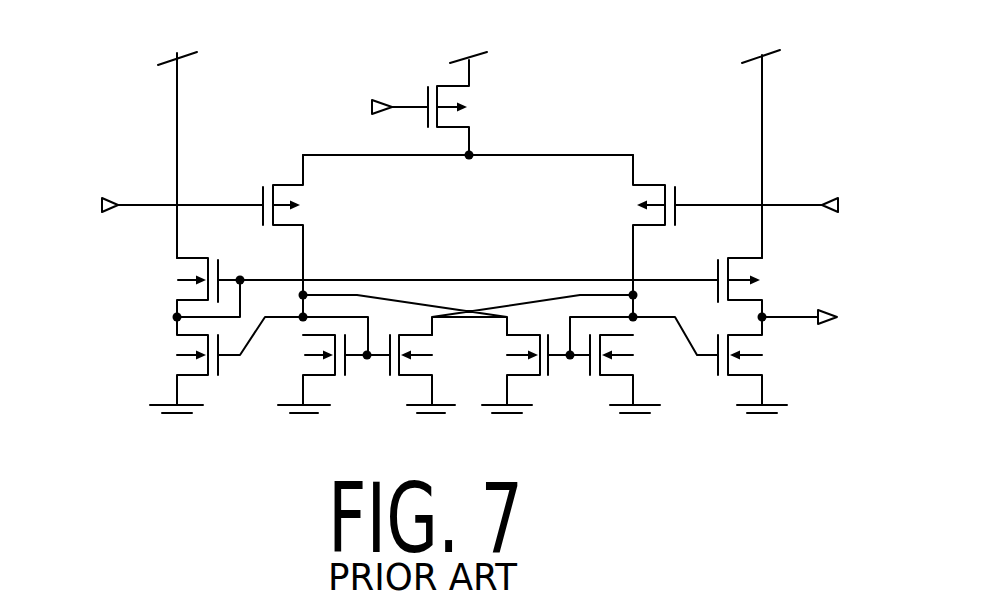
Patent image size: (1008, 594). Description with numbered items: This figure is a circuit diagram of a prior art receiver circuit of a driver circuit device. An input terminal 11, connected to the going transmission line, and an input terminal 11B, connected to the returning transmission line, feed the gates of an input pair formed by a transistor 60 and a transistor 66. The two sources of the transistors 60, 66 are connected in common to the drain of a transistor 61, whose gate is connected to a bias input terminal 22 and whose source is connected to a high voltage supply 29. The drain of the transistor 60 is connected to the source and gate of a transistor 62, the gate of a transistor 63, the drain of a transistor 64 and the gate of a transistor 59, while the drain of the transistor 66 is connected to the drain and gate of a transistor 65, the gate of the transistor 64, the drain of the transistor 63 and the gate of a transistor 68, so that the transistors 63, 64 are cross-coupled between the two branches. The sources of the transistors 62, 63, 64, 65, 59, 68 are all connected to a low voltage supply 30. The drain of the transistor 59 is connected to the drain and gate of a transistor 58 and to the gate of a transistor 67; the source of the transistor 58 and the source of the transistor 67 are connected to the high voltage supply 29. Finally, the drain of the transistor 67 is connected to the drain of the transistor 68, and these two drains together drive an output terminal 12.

The high voltage supply 29 is at (177, 58).
The bias input terminal 22 is at (379, 97).
The transistor 61 is at (475, 107).
The transistor 60 is at (312, 204).
The transistor 66 is at (627, 205).
The input terminal 11B is at (104, 197).
The input terminal 11 is at (828, 197).
The transistor 58 is at (172, 281).
The transistor 67 is at (770, 278).
The transistor 59 is at (177, 357).
The transistor 62 is at (293, 357).
The transistor 63 is at (427, 346).
The transistor 64 is at (507, 368).
The transistor 65 is at (632, 362).
The transistor 68 is at (768, 365).
The output terminal 12 is at (836, 322).
The low voltage supply 30 is at (162, 414).